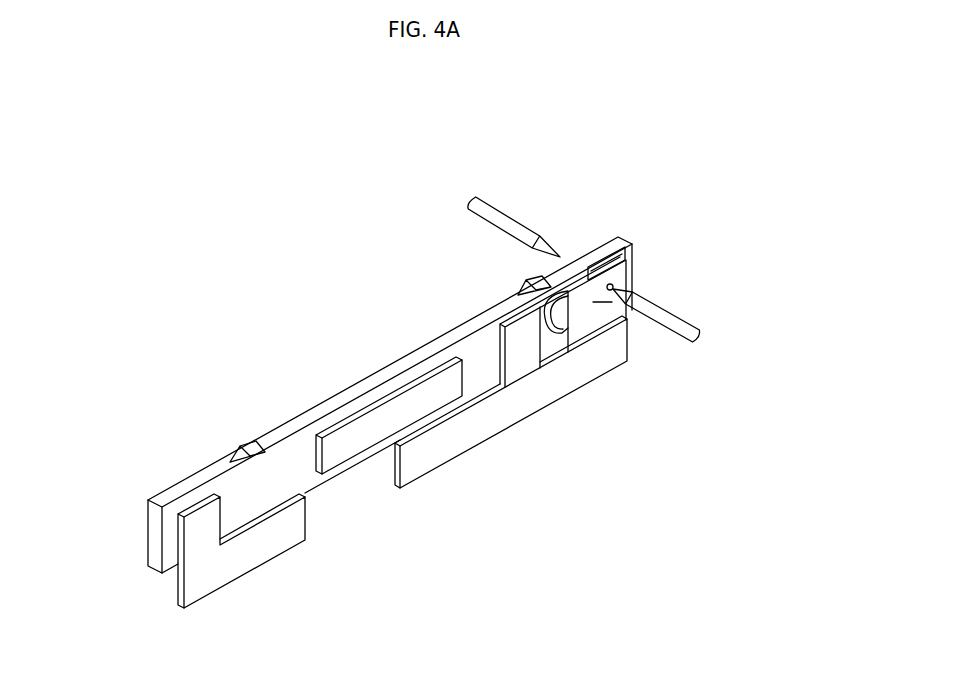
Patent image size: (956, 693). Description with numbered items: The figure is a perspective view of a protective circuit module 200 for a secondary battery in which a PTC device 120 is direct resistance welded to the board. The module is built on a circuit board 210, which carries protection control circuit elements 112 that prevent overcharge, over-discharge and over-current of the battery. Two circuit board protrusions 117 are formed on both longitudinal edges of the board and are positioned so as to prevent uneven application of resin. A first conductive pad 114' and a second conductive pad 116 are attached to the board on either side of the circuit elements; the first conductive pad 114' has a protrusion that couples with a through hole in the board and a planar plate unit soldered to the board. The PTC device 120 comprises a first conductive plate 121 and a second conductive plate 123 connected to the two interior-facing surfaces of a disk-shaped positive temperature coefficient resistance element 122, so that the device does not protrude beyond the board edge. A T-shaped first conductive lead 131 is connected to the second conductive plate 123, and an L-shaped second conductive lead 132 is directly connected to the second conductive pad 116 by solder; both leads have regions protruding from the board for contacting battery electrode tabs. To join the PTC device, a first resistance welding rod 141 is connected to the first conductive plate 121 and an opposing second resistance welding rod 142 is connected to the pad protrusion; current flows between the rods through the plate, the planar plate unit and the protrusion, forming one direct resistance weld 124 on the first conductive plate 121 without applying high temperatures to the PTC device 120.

The protective circuit module 200 is at (186, 277).
The circuit board 210 is at (380, 377).
The second conductive pad 116 is at (195, 505).
The circuit board protrusions 117 is at (247, 446).
The first conductive pad 114' is at (594, 221).
The second conductive lead 132 is at (247, 562).
The protection control circuit elements 112 is at (341, 453).
The first conductive lead 131 is at (467, 438).
The PTC device 120 is at (708, 434).
The first conductive plate 121 is at (628, 320).
The positive temperature coefficient resistance element 122 is at (595, 303).
The second conductive plate 123 is at (544, 338).
The direct resistance weld 124 is at (614, 284).
The first resistance welding rod 141 is at (688, 318).
The second resistance welding rod 142 is at (502, 217).